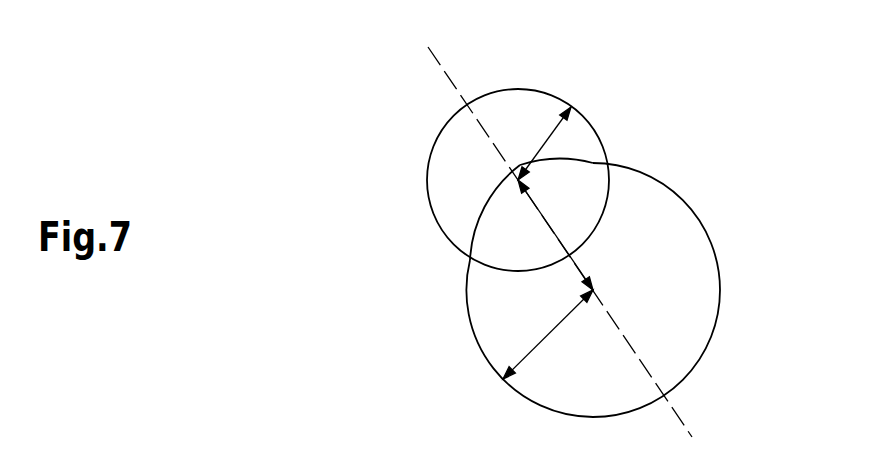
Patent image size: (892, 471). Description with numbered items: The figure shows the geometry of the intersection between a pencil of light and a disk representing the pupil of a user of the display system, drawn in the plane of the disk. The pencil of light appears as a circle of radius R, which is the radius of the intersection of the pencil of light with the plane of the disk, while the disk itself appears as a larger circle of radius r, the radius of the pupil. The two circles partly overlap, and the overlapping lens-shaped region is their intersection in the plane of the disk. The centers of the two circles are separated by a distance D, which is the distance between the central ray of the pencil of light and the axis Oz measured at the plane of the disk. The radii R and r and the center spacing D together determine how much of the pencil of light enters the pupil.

The radius of the intersection of the pencil of light and the plane of the disk R is at (544, 143).
The radius of the disk r is at (548, 334).
The distance between the center of the pencil of light and the center of the disk D is at (555, 235).